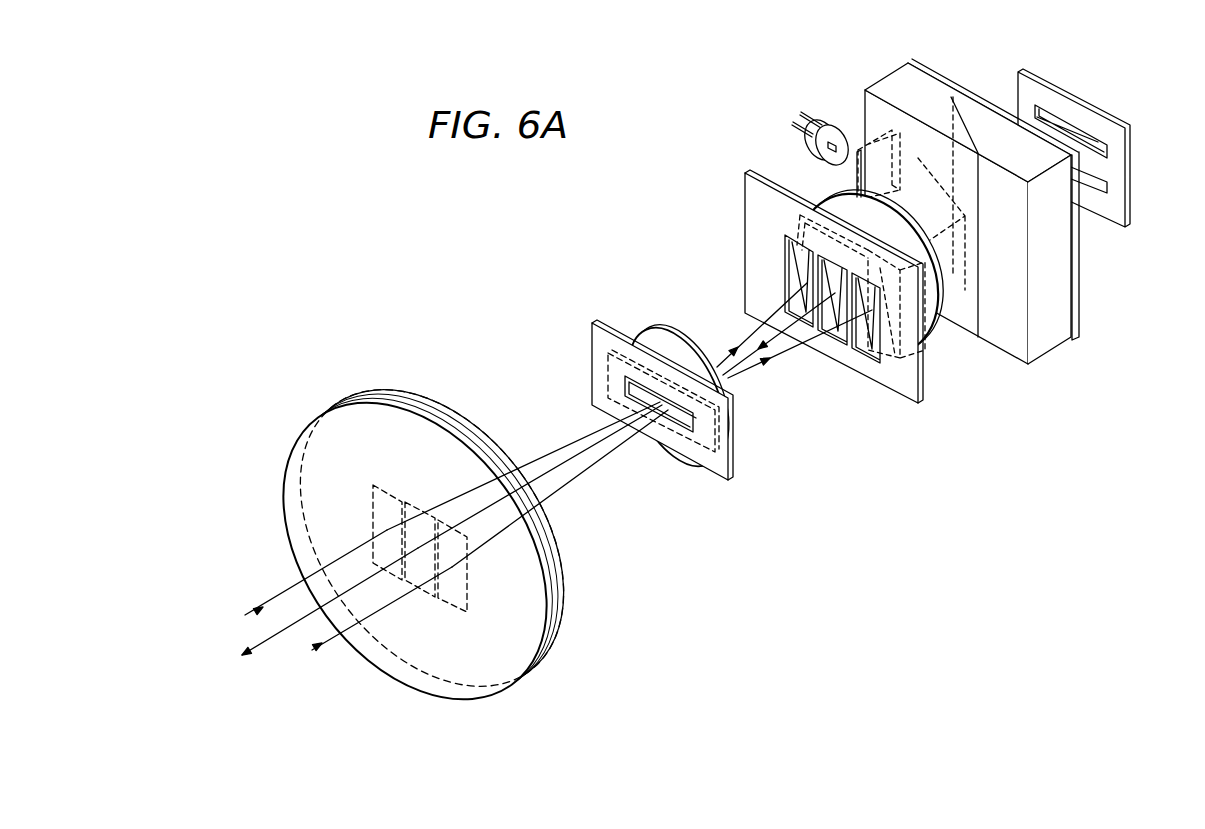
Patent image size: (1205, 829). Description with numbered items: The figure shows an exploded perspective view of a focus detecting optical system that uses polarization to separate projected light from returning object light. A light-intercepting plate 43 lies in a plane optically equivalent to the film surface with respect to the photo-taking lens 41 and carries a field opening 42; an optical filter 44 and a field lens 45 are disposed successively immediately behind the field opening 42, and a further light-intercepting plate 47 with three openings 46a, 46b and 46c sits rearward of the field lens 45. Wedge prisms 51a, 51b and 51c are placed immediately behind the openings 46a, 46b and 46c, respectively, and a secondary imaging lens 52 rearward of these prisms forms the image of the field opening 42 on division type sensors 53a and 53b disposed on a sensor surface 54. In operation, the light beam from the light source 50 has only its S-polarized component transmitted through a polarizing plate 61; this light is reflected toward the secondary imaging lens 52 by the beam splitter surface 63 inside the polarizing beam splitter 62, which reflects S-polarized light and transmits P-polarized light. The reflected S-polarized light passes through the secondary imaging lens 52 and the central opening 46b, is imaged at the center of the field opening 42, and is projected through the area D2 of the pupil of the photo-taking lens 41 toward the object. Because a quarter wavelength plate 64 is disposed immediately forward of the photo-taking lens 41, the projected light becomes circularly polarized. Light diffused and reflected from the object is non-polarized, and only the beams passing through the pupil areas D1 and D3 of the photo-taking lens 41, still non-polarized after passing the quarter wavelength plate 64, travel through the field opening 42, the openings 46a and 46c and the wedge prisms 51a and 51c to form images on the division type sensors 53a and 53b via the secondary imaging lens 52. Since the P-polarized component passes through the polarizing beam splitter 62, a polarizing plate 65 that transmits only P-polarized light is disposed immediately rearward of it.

The photo-taking lens 41 is at (384, 392).
The field opening 42 is at (688, 420).
The light-intercepting plate 43 is at (735, 440).
The optical filter 44 is at (606, 367).
The field lens 45 is at (665, 330).
The opening 46a is at (787, 272).
The opening 46b is at (833, 337).
The opening 46c is at (875, 360).
The light-intercepting plate 47 is at (747, 197).
The light source 50 is at (832, 123).
The wedge prism 51a is at (797, 237).
The wedge prism 51b is at (832, 320).
The wedge prism 51c is at (925, 383).
The secondary imaging lens 52 is at (943, 327).
The division type sensor 53a is at (1110, 148).
The division type sensor 53b is at (1110, 188).
The sensor surface 54 is at (1033, 88).
The polarizing plate 61 is at (888, 150).
The polarizing beam splitter 62 is at (1058, 258).
The beam splitter surface 63 is at (949, 95).
The quarter wavelength plate 64 is at (290, 464).
The polarizing plate 65 is at (1082, 322).
The area of the pupil D1 is at (463, 603).
The area of the pupil D2 is at (427, 587).
The area of the pupil D3 is at (377, 567).